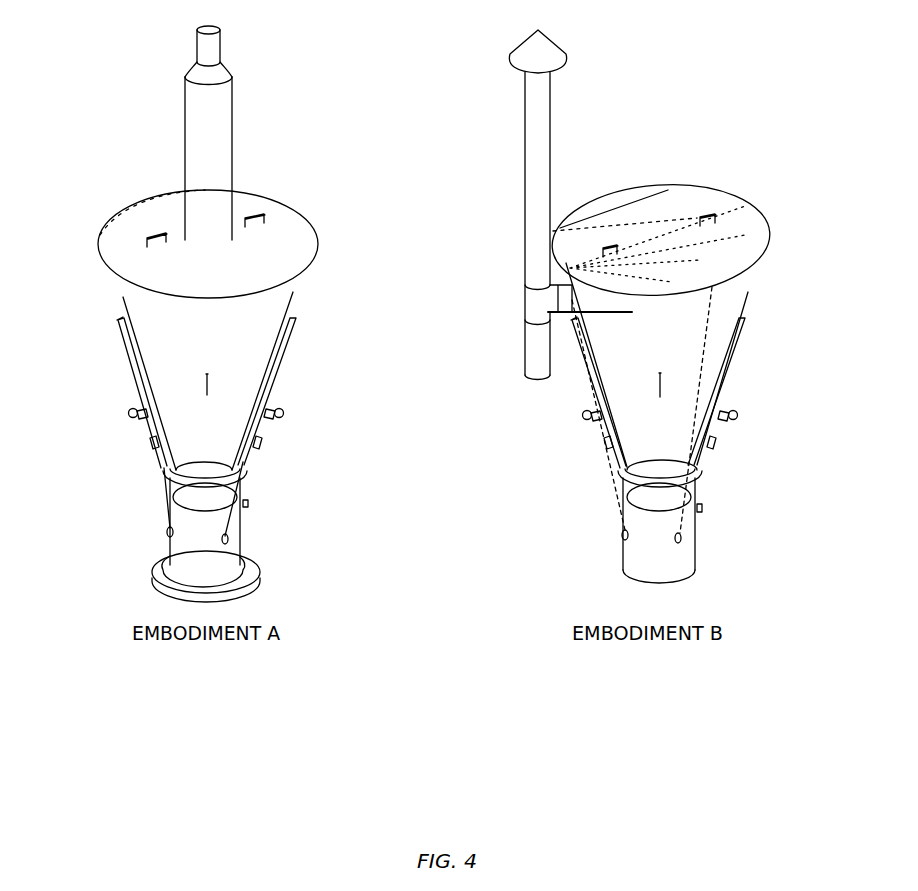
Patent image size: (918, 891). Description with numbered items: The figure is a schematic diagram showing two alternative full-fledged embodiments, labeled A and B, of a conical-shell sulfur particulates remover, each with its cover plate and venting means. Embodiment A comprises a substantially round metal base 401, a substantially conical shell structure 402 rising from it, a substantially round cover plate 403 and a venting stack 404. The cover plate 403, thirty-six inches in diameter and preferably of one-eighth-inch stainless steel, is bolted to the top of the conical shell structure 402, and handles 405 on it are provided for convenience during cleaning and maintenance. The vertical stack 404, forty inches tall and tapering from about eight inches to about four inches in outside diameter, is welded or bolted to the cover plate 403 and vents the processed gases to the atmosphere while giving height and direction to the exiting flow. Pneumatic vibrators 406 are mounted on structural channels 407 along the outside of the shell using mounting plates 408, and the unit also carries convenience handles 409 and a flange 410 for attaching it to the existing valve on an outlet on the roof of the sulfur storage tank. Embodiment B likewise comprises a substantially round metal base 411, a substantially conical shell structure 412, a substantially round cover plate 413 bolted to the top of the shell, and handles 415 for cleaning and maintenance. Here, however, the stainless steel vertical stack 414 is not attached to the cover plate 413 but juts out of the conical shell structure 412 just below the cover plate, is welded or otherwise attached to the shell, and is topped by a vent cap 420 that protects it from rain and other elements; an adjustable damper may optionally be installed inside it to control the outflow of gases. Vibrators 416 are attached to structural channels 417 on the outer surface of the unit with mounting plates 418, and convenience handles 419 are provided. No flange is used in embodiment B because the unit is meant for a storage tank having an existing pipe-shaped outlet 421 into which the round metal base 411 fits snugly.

The round metal base 401 is at (185, 496).
The conical shell structure 402 is at (129, 300).
The cover plate 403 is at (253, 199).
The venting stack 404 is at (232, 125).
The handles 405 is at (156, 241).
The pneumatic vibrators 406 is at (133, 408).
The structural channels 407 is at (297, 320).
The mounting plates 408 is at (148, 421).
The convenience handles 409 is at (207, 374).
The flange 410 is at (250, 550).
The round metal base 411 is at (700, 513).
The conical shell structure 412 is at (720, 323).
The cover plate 413 is at (705, 201).
The venting stack 414 is at (550, 125).
The handles 415 is at (609, 244).
The vibrators 416 is at (588, 422).
The structural channels 417 is at (748, 343).
The mounting plates 418 is at (599, 423).
The convenience handles 419 is at (660, 373).
The vent cap 420 is at (558, 45).
The pipe-shaped outlet 421 is at (623, 553).